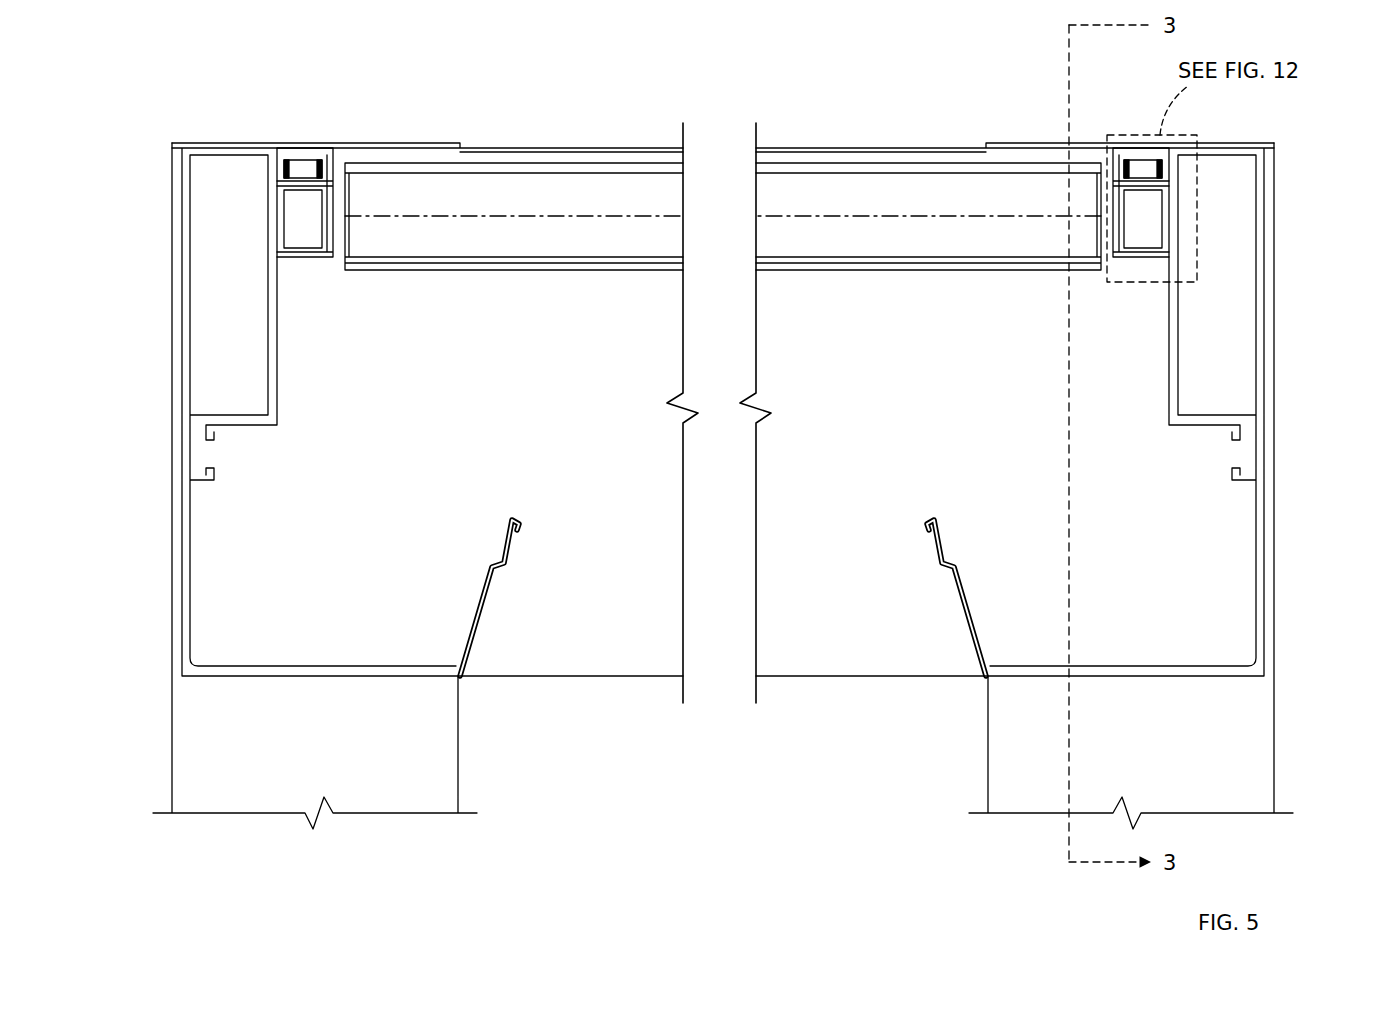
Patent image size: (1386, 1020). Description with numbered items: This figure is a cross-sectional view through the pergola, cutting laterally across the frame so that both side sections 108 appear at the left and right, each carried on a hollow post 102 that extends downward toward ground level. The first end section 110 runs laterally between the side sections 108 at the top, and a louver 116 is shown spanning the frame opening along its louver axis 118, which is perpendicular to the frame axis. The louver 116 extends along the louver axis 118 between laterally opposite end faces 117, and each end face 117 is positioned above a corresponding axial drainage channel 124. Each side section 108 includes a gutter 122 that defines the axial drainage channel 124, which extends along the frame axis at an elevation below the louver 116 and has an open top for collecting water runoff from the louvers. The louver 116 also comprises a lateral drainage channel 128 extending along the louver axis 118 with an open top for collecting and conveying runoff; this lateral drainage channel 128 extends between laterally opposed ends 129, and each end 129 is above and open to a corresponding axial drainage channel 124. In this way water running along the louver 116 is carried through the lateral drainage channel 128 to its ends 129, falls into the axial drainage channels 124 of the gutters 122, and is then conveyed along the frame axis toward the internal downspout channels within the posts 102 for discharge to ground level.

The post 102 is at (1276, 762).
The side section 108 is at (188, 290).
The first end section 110 is at (594, 148).
The louver 116 is at (882, 172).
The end face 117 is at (333, 165).
The louver axis 118 is at (805, 215).
The gutter 122 is at (480, 600).
The axial drainage channel 124 is at (390, 542).
The lateral drainage channel 128 is at (890, 240).
The end 129 is at (334, 262).